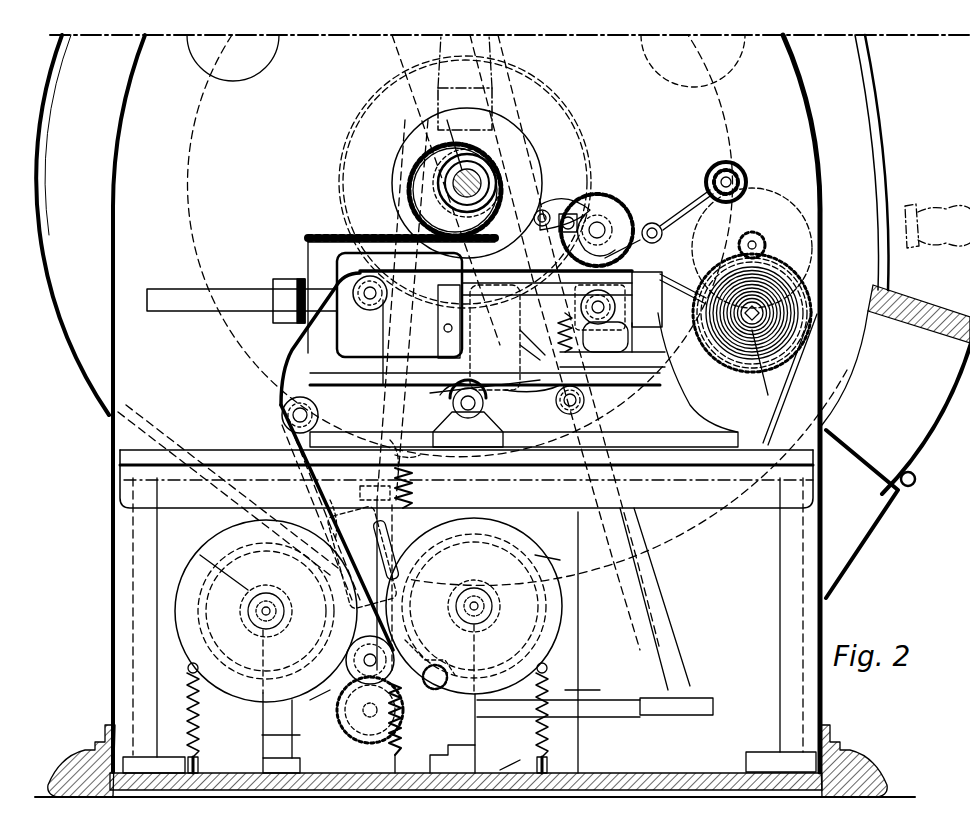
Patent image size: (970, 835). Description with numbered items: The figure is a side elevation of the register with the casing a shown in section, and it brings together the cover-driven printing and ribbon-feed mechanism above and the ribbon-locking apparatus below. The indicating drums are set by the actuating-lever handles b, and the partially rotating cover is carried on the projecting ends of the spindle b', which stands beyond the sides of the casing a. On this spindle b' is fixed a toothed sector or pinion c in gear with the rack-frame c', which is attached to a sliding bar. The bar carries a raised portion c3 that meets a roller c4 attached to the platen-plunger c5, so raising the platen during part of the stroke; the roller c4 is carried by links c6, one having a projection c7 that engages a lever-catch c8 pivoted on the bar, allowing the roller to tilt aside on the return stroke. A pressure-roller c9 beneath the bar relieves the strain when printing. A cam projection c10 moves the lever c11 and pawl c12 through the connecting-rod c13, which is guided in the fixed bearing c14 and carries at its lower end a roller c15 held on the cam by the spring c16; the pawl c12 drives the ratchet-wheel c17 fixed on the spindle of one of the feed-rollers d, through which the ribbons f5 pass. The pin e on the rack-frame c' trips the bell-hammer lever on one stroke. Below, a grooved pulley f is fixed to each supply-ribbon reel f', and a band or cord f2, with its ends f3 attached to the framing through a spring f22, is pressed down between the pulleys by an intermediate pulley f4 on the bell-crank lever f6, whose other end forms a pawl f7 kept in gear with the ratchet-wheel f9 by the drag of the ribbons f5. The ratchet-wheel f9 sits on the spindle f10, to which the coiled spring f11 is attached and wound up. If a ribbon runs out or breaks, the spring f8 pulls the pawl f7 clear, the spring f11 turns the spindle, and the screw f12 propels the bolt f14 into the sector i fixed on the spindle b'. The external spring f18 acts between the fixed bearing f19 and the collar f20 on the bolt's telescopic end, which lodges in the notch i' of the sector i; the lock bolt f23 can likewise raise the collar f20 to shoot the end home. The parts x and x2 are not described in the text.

The casing a is at (48, 241).
The actuating-lever handle b is at (579, 342).
The spindle b' is at (486, 174).
The toothed sector or pinion c is at (455, 190).
The rack-frame c' is at (484, 296).
The raised portion c3 is at (438, 350).
The roller c4 is at (581, 340).
The platen-plunger c5 is at (385, 297).
The link c6 is at (444, 327).
The projection c7 is at (485, 372).
The lever-catch c8 is at (473, 413).
The pressure-roller c9 is at (446, 402).
The cam projection c10 is at (532, 402).
The lever c11 is at (604, 220).
The pawl c12 is at (565, 204).
The connecting-rod c13 is at (585, 307).
The fixed bearing c14 is at (470, 290).
The roller c15 is at (584, 400).
The spring c16 is at (534, 344).
The ratchet-wheel c17 is at (659, 222).
The feed-roller d is at (689, 319).
The pin e is at (307, 259).
The sector i is at (255, 461).
The notch i' is at (405, 446).
The roller x is at (745, 172).
The gear wheel x2 is at (752, 272).
The grooved pulley f is at (382, 608).
The supply-ribbon reel f' is at (368, 645).
The band or cord f2 is at (373, 606).
The cord ends f3 is at (371, 711).
The intermediate pulley f4 is at (314, 682).
The ribbon f5 is at (320, 722).
The bell-crank lever f6 is at (430, 657).
The pawl f7 is at (435, 690).
The spring f8 is at (370, 714).
The ratchet-wheel f9 is at (369, 728).
The spindle f10 is at (268, 747).
The coiled spring f11 is at (584, 664).
The screw f12 is at (181, 745).
The bolt f14 is at (513, 763).
The external spring f18 is at (414, 496).
The fixed bearing f19 is at (414, 478).
The collar f20 is at (420, 520).
The spring f22 is at (553, 748).
The lock bolt f23 is at (340, 511).